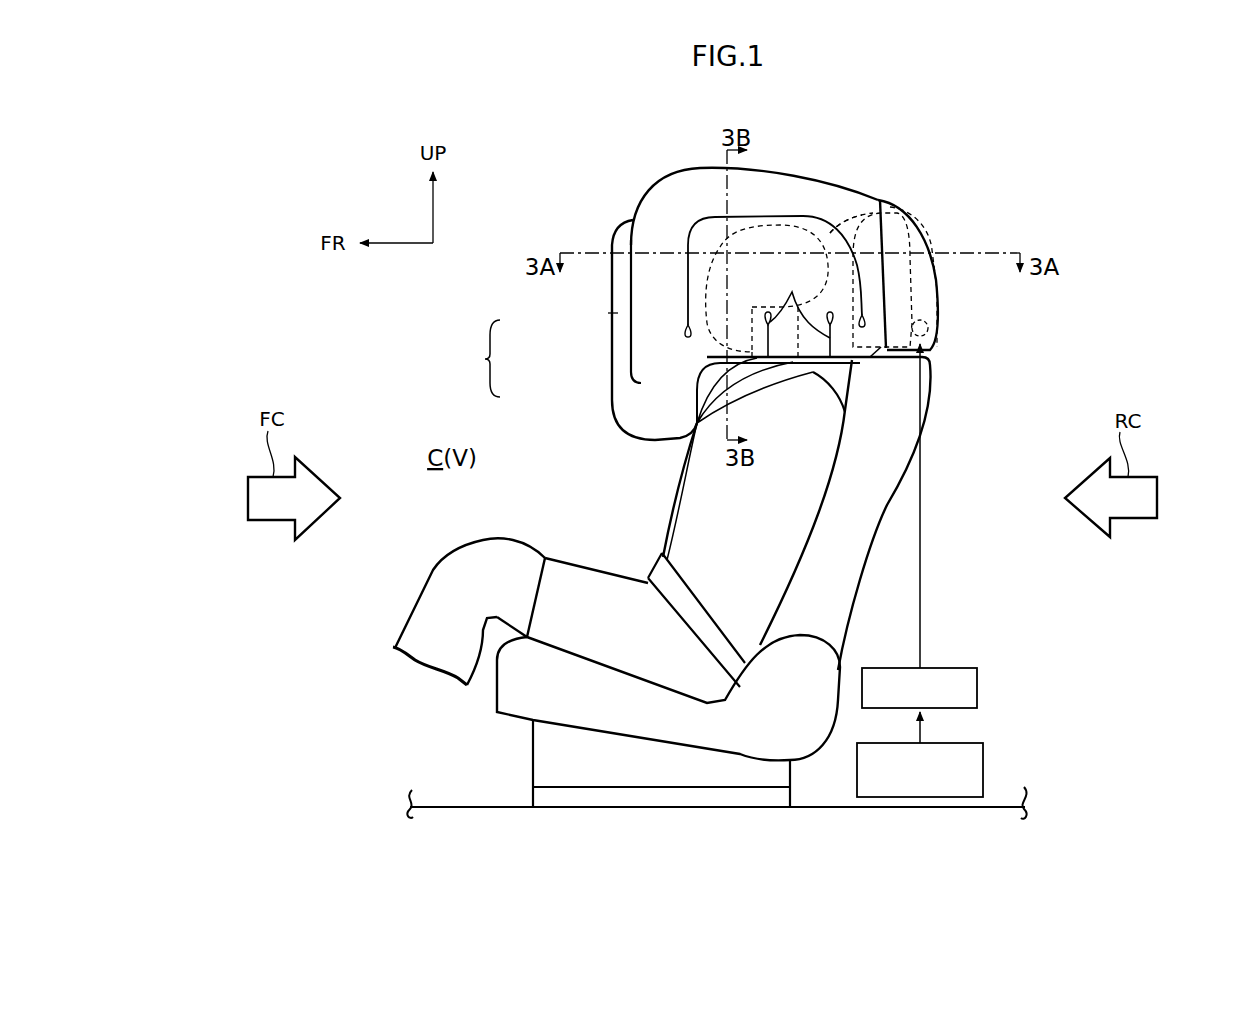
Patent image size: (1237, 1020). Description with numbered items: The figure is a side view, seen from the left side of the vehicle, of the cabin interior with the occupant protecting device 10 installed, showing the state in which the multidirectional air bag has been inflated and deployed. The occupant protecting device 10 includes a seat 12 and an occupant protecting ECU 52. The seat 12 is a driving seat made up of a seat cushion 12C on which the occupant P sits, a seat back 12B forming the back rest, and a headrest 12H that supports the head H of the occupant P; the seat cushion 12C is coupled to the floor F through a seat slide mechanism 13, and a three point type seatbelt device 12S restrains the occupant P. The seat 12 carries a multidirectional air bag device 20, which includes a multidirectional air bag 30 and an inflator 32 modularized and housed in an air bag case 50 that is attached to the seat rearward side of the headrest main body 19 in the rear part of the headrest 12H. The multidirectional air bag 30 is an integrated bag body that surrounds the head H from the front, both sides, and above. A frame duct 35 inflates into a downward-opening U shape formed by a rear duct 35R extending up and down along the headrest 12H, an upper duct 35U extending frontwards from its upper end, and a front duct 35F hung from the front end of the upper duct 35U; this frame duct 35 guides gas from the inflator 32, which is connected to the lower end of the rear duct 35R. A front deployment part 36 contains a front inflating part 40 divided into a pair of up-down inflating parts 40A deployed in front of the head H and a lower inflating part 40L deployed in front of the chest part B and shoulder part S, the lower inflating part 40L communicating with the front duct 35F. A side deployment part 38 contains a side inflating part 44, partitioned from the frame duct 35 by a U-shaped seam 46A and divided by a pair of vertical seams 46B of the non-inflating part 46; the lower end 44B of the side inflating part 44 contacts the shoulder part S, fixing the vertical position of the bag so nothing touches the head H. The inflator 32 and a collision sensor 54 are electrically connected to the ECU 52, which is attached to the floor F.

The occupant protecting device 10 is at (430, 395).
The seat 12 is at (490, 694).
The seat back 12B is at (815, 545).
The seat cushion 12C is at (623, 697).
The headrest 12H is at (910, 206).
The seatbelt device 12S is at (675, 470).
The seat slide mechanism 13 is at (533, 795).
The headrest main body 19 is at (912, 287).
The multidirectional air bag device 20 is at (942, 167).
The multidirectional air bag 30 is at (601, 216).
The inflator 32 is at (932, 333).
The frame duct 35 is at (635, 205).
The upper duct 35U is at (782, 187).
The front duct 35F is at (640, 245).
The rear duct 35R is at (870, 264).
The front deployment part 36 is at (601, 291).
The side deployment part 38 is at (697, 216).
The side inflating part 44 is at (739, 234).
The lower end of side inflating part 44B is at (737, 363).
The non-inflating part 46 is at (816, 249).
The U-shaped seam 46A is at (807, 216).
The vertical seam 46B is at (767, 291).
The front inflating part 40 is at (573, 359).
The up-down inflating part 40A is at (613, 312).
The lower inflating part 40L is at (620, 407).
The air bag case 50 is at (938, 315).
The occupant protecting ECU 52 is at (945, 668).
The collision sensor 54 is at (947, 742).
The occupant P is at (558, 555).
The head H is at (922, 230).
The chest part B is at (692, 423).
The shoulder part S is at (845, 415).
The floor F is at (442, 805).